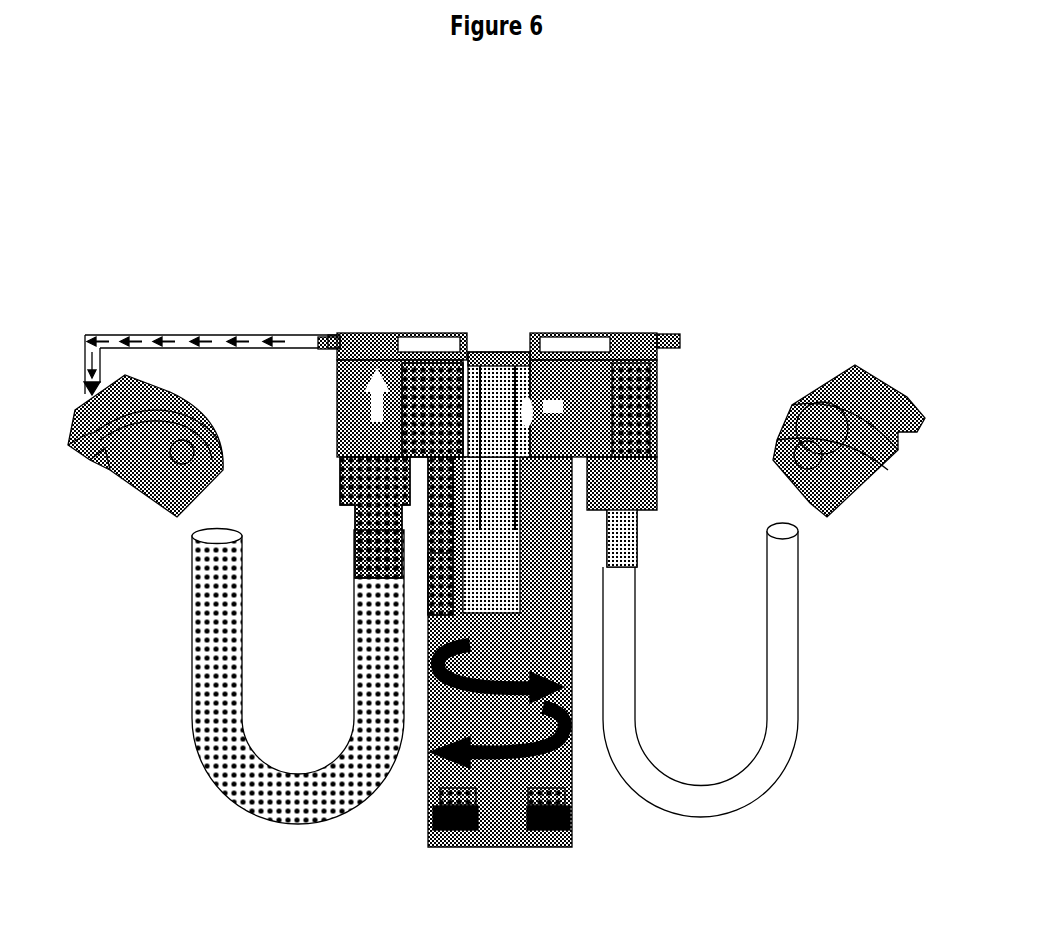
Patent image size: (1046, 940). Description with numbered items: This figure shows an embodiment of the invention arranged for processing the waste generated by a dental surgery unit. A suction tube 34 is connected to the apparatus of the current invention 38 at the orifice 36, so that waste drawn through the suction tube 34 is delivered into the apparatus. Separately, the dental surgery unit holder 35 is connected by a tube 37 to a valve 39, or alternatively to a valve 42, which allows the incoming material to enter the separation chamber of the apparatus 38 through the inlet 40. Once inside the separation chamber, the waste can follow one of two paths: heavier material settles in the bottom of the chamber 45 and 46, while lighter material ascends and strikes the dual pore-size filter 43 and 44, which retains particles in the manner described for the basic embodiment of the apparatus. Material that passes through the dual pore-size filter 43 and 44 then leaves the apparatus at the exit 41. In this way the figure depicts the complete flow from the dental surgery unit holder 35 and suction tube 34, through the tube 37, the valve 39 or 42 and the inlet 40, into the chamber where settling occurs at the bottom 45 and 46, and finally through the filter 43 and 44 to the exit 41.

The suction tube 34 is at (165, 603).
The dental surgery unit holder 35 is at (298, 396).
The orifice 36 is at (345, 548).
The tube 37 is at (163, 330).
The apparatus of current invention 38 is at (400, 633).
The valve 39 is at (394, 385).
The inlet 40 is at (431, 356).
The exit 41 is at (496, 340).
The valve 42 is at (619, 365).
The dual pore-size filter 43 is at (607, 428).
The dual pore-size filter 44 is at (607, 552).
The bottom of the chamber 45 is at (547, 840).
The bottom of the chamber 46 is at (458, 840).